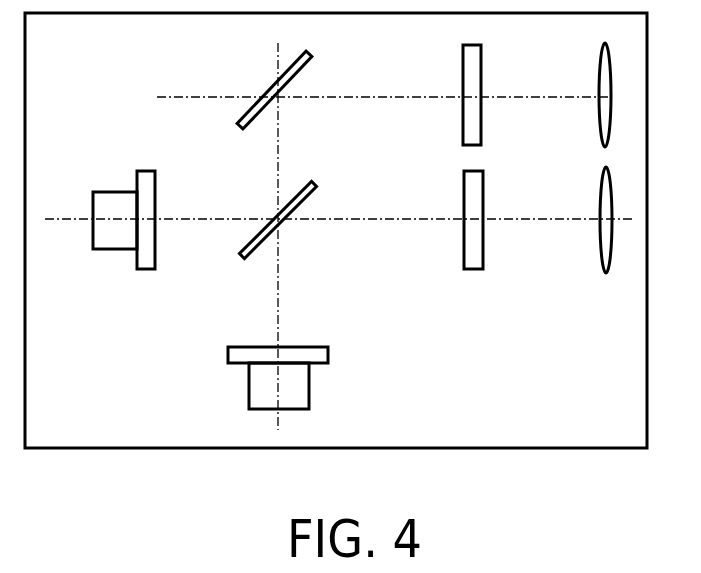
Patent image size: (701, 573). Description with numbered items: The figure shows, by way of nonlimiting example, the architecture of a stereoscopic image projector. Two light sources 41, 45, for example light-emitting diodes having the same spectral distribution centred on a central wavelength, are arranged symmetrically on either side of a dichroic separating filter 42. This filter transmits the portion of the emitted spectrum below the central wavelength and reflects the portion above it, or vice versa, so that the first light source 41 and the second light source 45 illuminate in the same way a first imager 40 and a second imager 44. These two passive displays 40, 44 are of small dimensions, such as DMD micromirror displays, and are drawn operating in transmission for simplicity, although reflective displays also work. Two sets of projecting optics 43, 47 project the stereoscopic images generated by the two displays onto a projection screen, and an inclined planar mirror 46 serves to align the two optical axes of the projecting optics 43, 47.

The passive display 40 is at (470, 130).
The light source 41 is at (110, 192).
The dichroic separating filter 42 is at (315, 182).
The projecting optics 43 is at (603, 125).
The passive display 44 is at (470, 255).
The light source 45 is at (300, 384).
The inclined planar mirror 46 is at (241, 128).
The projecting optics 47 is at (603, 250).